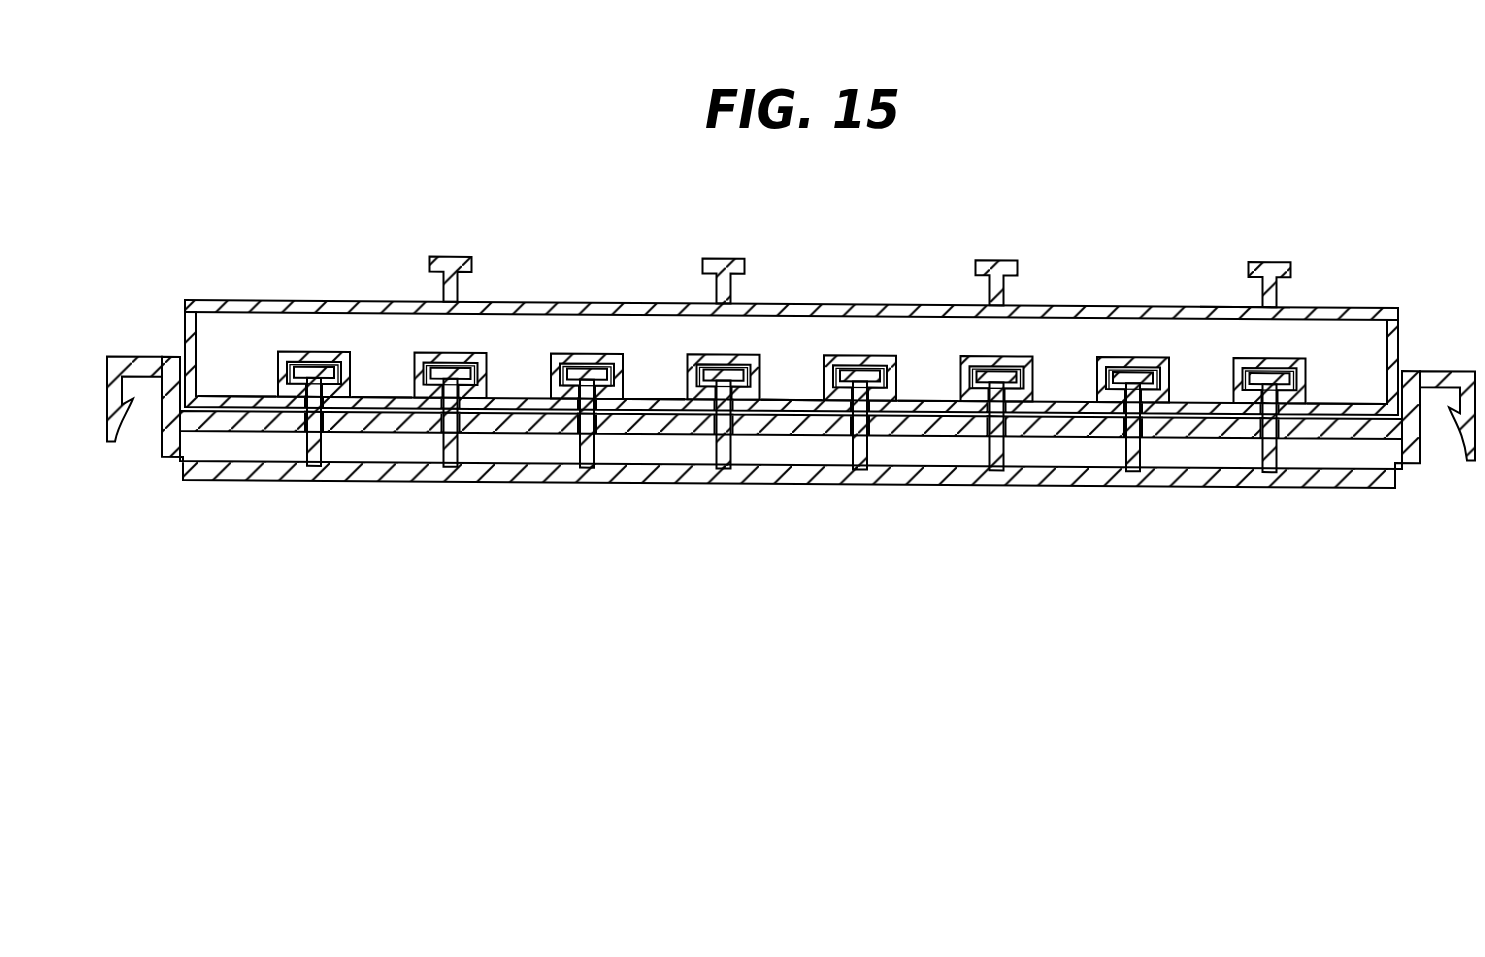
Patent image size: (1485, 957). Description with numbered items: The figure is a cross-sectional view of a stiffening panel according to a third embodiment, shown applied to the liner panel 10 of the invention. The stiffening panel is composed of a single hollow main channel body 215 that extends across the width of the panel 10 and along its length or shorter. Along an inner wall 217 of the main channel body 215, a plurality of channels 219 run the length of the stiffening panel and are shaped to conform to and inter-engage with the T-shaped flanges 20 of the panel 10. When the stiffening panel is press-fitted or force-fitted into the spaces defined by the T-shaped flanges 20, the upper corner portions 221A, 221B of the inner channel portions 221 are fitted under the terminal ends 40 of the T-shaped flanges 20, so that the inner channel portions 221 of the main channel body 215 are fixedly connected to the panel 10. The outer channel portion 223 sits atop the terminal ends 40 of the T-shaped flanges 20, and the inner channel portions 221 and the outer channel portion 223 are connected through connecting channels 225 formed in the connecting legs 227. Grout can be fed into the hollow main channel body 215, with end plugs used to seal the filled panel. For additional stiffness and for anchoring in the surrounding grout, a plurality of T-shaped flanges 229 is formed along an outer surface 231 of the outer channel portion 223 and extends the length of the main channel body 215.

The panel 10 is at (830, 552).
The T-shaped flanges 20 is at (457, 364).
The terminal ends 40 is at (313, 364).
The main channel body 215 is at (330, 306).
The inner wall 217 is at (395, 410).
The channels 219 is at (300, 410).
The inner channel portions 221 is at (247, 378).
The upper corner portion 221A is at (728, 378).
The upper corner portion 221B is at (852, 363).
The outer channel portion 223 is at (287, 325).
The connecting channels 225 is at (662, 377).
The connecting legs 227 is at (690, 353).
The T-shaped flanges 229 is at (460, 256).
The outer surface 231 is at (1240, 300).